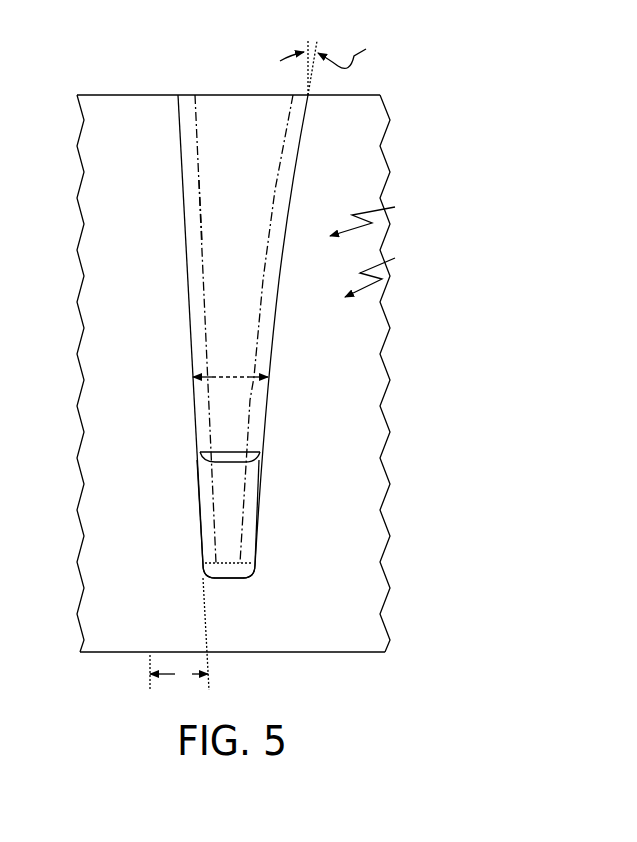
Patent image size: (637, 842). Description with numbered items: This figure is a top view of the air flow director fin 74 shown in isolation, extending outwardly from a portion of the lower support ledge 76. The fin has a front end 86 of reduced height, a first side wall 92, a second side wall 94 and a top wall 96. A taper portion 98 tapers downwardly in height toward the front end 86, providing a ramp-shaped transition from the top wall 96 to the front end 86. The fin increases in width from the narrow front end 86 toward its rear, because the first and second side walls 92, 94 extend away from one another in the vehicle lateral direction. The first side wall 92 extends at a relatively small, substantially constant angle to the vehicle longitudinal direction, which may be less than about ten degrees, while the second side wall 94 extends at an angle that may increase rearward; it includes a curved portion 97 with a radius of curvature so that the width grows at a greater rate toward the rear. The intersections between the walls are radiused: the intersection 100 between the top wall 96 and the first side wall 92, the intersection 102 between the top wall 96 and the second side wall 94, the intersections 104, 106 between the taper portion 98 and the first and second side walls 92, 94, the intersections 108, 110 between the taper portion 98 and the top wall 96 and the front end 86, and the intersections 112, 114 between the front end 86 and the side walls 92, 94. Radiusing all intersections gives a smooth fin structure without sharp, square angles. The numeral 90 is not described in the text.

The air flow director fin 74 is at (386, 268).
The lower support ledge 76 is at (345, 432).
The front end 86 is at (230, 578).
The slot opening 90 is at (308, 95).
The first side wall 92 is at (193, 320).
The second side wall 94 is at (270, 348).
The top wall 96 is at (207, 203).
The curved portion 97 is at (377, 214).
The taper portion 98 is at (248, 478).
The intersection 100 is at (200, 252).
The intersection 102 is at (290, 162).
The intersection 104 is at (207, 512).
The intersection 106 is at (252, 513).
The intersection 108 is at (233, 450).
The intersection 110 is at (228, 565).
The intersection 112 is at (212, 571).
The intersection 114 is at (256, 573).